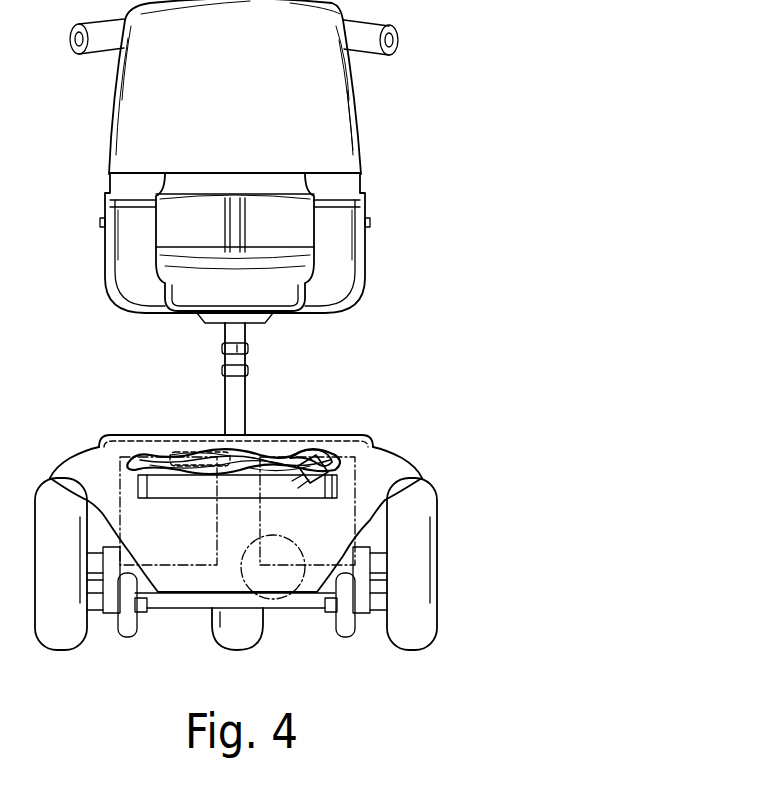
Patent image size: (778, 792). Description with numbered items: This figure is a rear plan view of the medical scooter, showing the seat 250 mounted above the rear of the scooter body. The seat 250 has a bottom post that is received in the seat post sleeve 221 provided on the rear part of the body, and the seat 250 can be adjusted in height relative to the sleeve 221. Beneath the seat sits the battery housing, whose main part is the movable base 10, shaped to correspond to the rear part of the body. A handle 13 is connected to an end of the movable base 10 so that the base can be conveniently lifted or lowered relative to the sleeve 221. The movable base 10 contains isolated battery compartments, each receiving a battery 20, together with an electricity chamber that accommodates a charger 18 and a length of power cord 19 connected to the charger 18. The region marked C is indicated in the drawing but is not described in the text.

The movable base 10 is at (392, 472).
The handle 13 is at (168, 485).
The charger 18 is at (208, 447).
The power cord 19 is at (307, 447).
The battery 20 is at (125, 480).
The seat post sleeve 221 is at (236, 389).
The seat 250 is at (332, 89).
The circle C is at (283, 597).